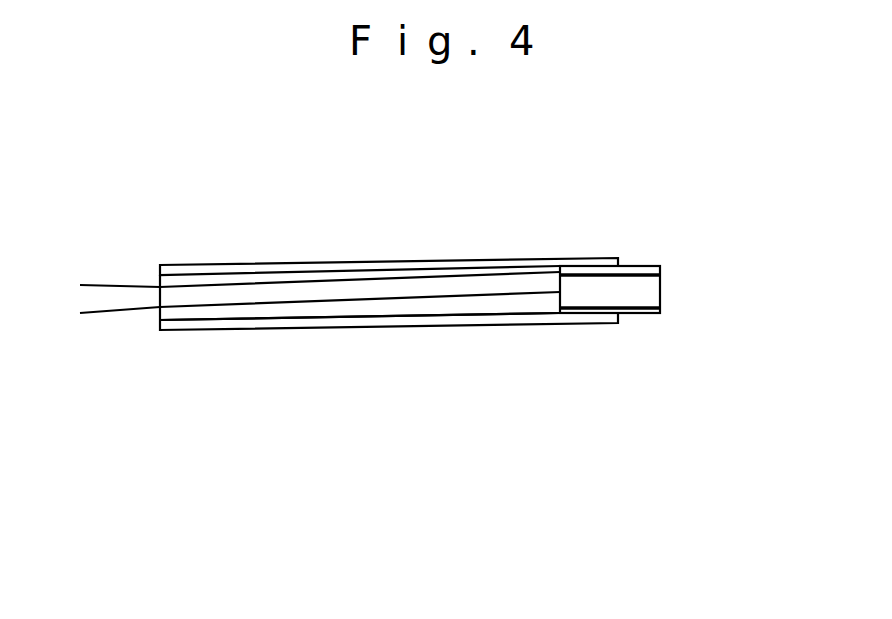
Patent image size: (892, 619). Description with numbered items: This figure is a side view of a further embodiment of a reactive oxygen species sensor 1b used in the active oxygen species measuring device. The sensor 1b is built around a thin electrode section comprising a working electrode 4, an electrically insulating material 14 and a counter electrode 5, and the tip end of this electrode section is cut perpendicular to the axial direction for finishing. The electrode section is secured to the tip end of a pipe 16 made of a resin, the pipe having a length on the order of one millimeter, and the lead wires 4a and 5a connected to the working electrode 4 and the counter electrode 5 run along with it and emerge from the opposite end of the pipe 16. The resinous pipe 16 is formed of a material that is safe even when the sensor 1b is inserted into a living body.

The pipe 16 is at (360, 262).
The reactive oxygen species sensor 1b is at (461, 336).
The counter electrode 5 is at (640, 264).
The working electrode 4 is at (650, 290).
The electrically insulating material 14 is at (647, 311).
The lead wire of the counter electrode 5a is at (102, 284).
The lead wire of the working electrode 4a is at (98, 316).